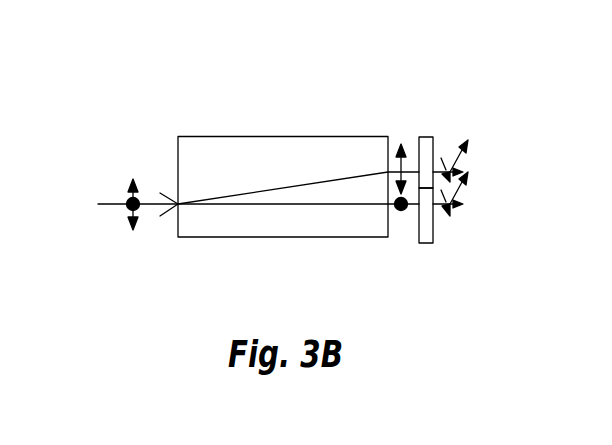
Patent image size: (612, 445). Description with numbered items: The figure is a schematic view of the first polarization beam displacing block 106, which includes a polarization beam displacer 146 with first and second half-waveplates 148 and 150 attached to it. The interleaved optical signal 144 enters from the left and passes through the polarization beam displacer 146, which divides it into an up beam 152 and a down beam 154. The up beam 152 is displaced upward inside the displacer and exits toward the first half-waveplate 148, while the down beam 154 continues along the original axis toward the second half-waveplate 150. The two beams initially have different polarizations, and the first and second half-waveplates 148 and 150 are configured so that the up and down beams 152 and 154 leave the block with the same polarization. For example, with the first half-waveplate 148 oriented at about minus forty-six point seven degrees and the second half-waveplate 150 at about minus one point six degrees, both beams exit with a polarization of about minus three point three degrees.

The first polarization beam displacing block 106 is at (409, 68).
The interleaved optical signal 144 is at (109, 203).
The polarization beam displacer 146 is at (283, 137).
The first half-waveplate 148 is at (425, 137).
The second half-waveplate 150 is at (427, 243).
The up beam 152 is at (345, 176).
The down beam 154 is at (320, 204).